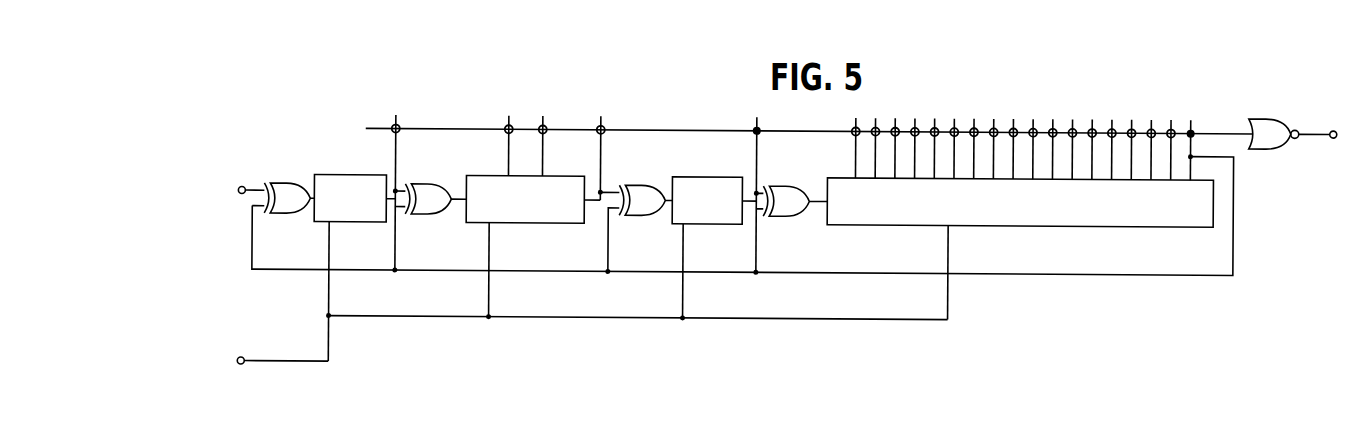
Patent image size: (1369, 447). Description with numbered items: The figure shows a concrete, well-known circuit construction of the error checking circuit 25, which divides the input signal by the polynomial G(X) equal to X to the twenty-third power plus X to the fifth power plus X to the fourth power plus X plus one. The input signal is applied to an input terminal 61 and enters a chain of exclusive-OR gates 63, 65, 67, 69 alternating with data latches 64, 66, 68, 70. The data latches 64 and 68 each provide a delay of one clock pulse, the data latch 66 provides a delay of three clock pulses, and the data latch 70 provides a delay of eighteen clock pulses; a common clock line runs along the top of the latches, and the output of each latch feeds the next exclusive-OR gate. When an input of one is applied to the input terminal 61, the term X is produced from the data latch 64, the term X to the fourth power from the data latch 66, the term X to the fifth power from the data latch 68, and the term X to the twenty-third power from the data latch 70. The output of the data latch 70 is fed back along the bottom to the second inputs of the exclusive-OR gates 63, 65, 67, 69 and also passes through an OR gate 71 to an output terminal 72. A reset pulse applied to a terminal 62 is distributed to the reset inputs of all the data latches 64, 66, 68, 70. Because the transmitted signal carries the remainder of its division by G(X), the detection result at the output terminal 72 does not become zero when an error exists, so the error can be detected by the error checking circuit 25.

The error checking circuit 25 is at (640, 108).
The input terminal 61 is at (242, 189).
The terminal 62 is at (243, 367).
The exclusive-OR gate 63 is at (292, 186).
The data latch 64 is at (350, 177).
The exclusive-OR gate 65 is at (430, 186).
The data latch 66 is at (489, 177).
The exclusive-OR gate 67 is at (643, 186).
The data latch 68 is at (705, 177).
The exclusive-OR gate 69 is at (796, 186).
The data latch 70 is at (897, 225).
The OR gate 71 is at (1268, 116).
The output terminal 72 is at (1332, 134).